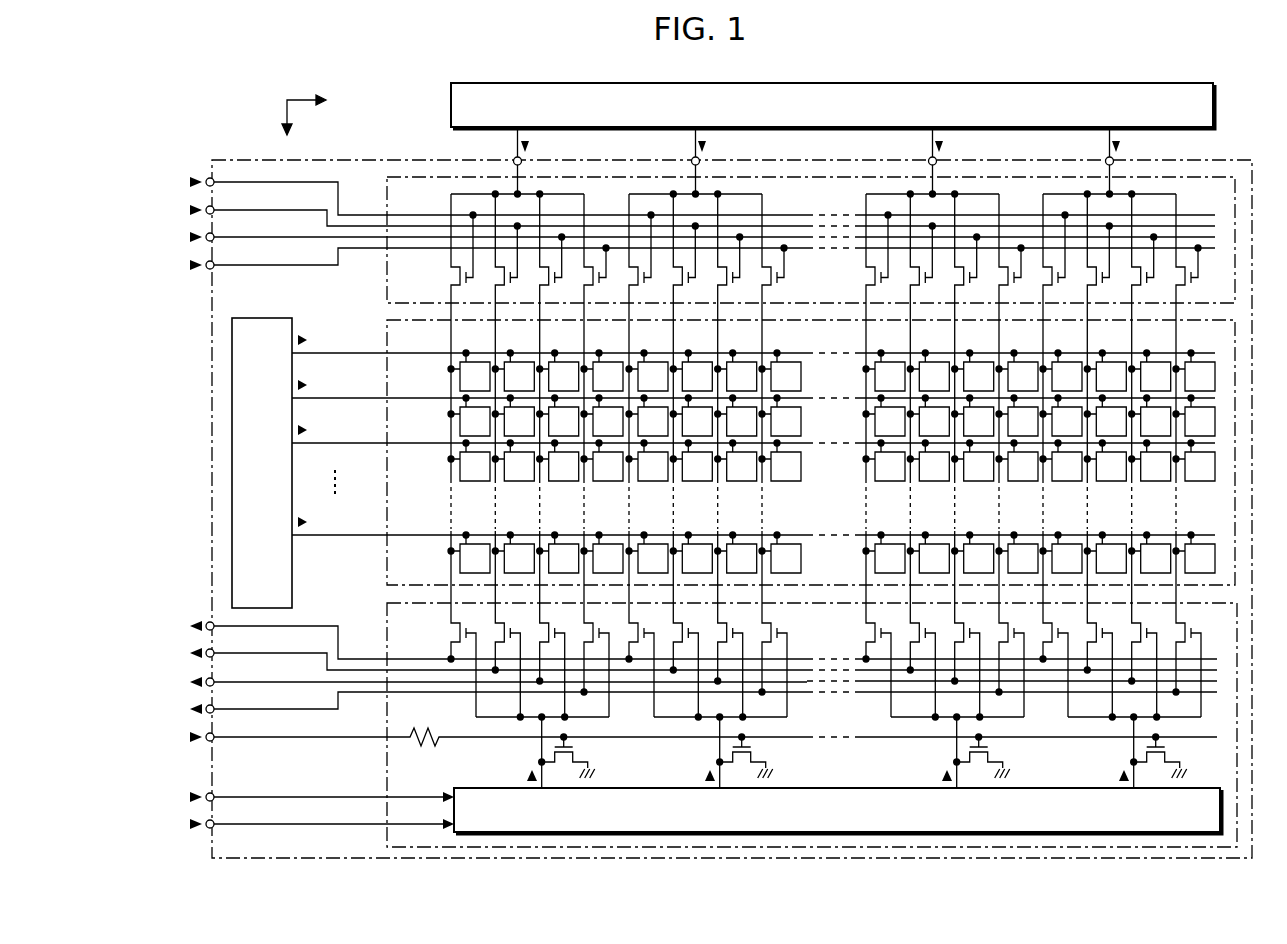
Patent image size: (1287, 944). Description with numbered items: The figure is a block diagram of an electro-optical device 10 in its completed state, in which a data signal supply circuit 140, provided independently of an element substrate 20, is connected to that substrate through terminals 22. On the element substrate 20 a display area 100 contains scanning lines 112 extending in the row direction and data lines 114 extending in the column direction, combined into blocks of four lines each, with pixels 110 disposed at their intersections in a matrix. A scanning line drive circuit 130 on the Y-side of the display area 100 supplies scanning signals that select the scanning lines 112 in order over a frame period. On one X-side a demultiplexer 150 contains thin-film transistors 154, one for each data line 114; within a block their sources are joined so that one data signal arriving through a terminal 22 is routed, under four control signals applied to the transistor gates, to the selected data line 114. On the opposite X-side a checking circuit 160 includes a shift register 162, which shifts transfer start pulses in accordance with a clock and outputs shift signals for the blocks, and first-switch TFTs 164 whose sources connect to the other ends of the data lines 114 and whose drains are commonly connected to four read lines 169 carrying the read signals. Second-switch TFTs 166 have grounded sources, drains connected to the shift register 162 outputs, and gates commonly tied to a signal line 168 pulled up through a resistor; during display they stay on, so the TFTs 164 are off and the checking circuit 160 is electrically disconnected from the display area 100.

The electro-optical device 10 is at (213, 85).
The element substrate 20 is at (210, 376).
The terminals 22 is at (515, 157).
The display area 100 is at (386, 553).
The pixels 110 is at (802, 375).
The scanning lines 112 is at (438, 352).
The data lines 114 is at (745, 325).
The scanning line drive circuit 130 is at (262, 318).
The data signal supply circuit 140 is at (451, 102).
The demultiplexer 150 is at (385, 282).
The thin-film transistors 154 is at (868, 270).
The checking circuit 160 is at (386, 640).
The shift register 162 is at (455, 790).
The TFTs (first switches) 164 is at (770, 623).
The TFTs (second switches) 166 is at (578, 762).
The signal line 168 is at (500, 738).
The read lines 169 is at (414, 700).